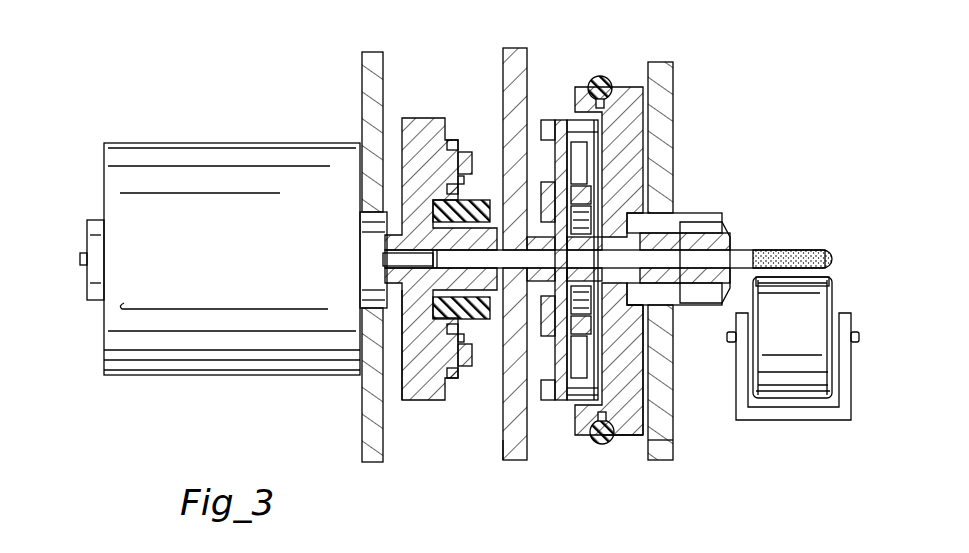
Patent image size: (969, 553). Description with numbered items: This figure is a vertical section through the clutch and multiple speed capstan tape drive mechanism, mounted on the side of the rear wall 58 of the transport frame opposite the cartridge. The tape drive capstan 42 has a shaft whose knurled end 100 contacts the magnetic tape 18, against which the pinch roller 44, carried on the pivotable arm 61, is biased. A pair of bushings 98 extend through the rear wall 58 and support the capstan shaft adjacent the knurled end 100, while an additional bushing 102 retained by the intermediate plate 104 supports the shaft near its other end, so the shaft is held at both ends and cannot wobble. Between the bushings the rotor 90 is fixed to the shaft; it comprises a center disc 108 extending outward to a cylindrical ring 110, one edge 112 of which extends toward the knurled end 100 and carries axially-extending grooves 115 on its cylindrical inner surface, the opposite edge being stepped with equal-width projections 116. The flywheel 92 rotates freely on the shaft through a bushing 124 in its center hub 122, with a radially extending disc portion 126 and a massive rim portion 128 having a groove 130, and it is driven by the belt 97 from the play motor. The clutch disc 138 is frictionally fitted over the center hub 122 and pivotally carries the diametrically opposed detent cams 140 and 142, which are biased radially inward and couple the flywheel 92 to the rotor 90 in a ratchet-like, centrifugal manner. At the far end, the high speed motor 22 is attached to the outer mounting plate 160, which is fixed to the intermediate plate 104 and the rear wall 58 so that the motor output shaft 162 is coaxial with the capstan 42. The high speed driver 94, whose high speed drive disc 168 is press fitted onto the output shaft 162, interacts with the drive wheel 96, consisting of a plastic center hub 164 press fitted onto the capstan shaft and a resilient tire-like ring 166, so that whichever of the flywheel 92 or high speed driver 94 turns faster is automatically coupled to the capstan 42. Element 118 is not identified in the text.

The high speed motor 22 is at (152, 158).
The outer mounting plate 160 is at (372, 68).
The center hub 164 is at (392, 242).
The output shaft 162 is at (392, 261).
The high speed driver 94 is at (423, 125).
The high speed drive disc 168 is at (418, 385).
The bushing 102 is at (492, 185).
The drive wheel 96 is at (470, 200).
The tire-like ring 166 is at (478, 322).
The intermediate plate 118 is at (527, 125).
The intermediate plate 104 is at (507, 435).
The projections 116 is at (550, 130).
The rotor 90 is at (562, 112).
The detent cam 140 is at (583, 150).
The clutch disc 138 is at (578, 188).
The center disc 108 is at (545, 400).
The cylindrical ring 110 is at (566, 403).
The axially-extending grooves 115 is at (587, 398).
The groove 130 is at (626, 88).
The belt 97 is at (603, 74).
The edge 112 is at (593, 440).
The flywheel 92 is at (637, 450).
The bushing 124 is at (630, 292).
The center hub 122 is at (617, 289).
The disc portion 126 is at (633, 362).
The detent cam 142 is at (640, 393).
The rim portion 128 is at (650, 76).
The rear wall 58 is at (663, 444).
The bushings 98 is at (674, 232).
The tape drive capstan 42 is at (741, 251).
The knurled end 100 is at (793, 251).
The magnetic tape 18 is at (813, 277).
The pinch roller 44 is at (827, 303).
The arm 61 is at (842, 398).